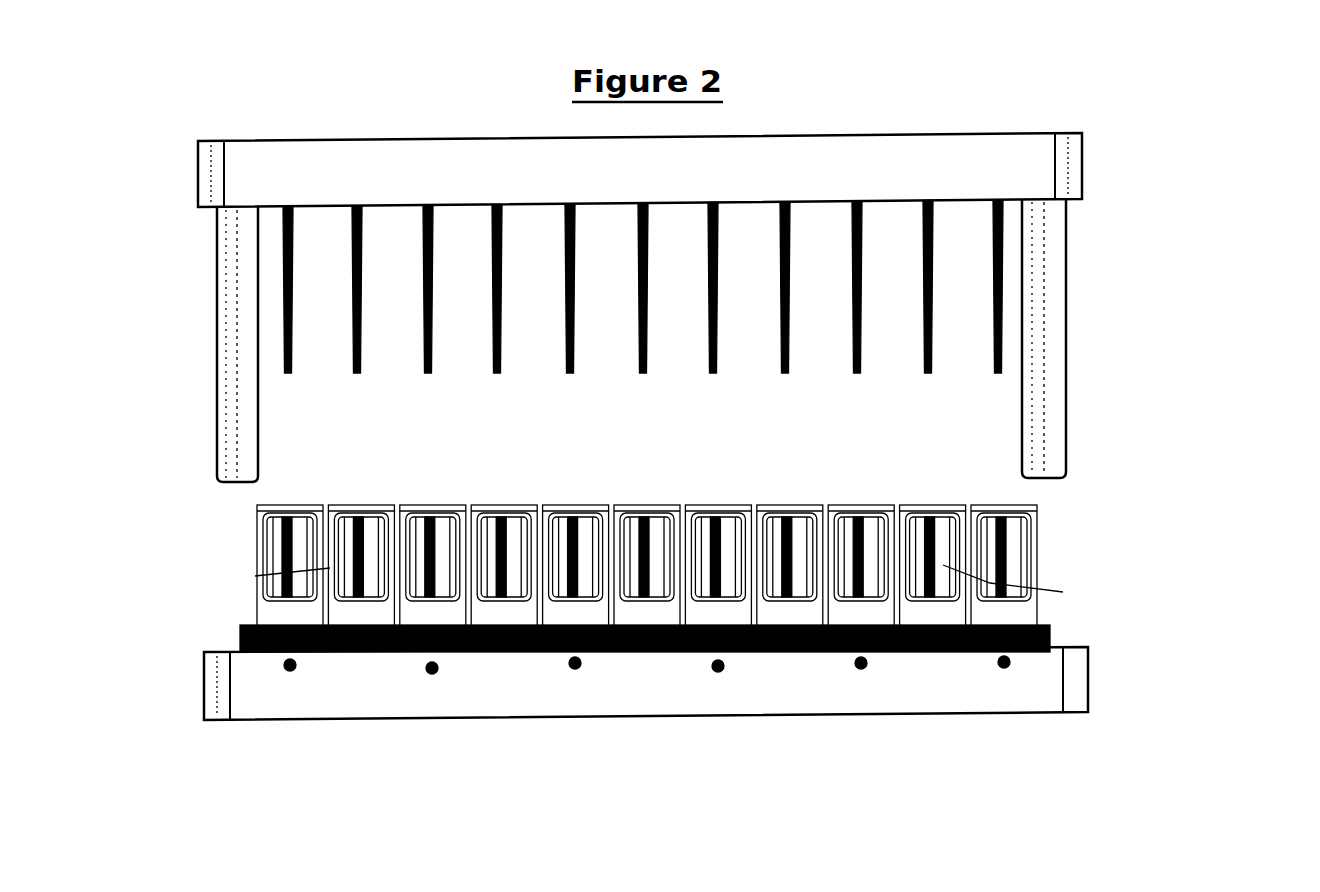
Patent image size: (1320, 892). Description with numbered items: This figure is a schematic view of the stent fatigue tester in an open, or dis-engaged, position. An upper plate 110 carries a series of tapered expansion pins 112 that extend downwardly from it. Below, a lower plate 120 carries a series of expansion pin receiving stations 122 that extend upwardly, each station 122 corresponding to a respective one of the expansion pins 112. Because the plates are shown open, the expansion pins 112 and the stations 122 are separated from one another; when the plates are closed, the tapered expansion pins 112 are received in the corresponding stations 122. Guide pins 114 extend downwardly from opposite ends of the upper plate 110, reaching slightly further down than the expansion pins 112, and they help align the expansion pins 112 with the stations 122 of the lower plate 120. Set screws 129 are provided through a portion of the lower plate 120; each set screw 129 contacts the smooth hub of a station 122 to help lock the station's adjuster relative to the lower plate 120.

The upper plate 110 is at (669, 263).
The tapered expansion pins 112 is at (340, 279).
The guide pins 114 is at (1060, 324).
The lower plate 120 is at (760, 678).
The expansion pin receiving stations 122 is at (785, 560).
The set screw 129 is at (432, 668).